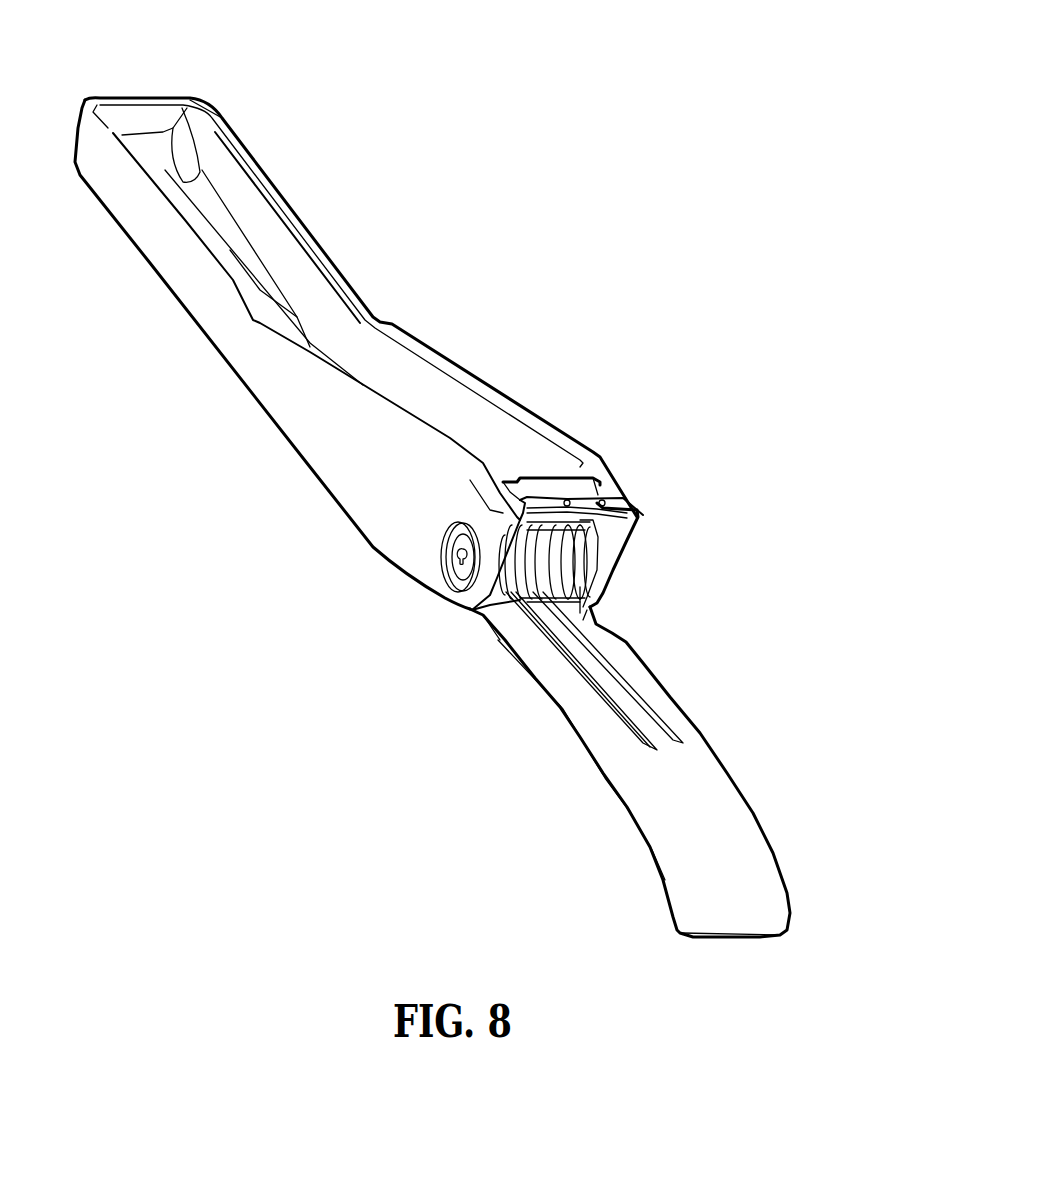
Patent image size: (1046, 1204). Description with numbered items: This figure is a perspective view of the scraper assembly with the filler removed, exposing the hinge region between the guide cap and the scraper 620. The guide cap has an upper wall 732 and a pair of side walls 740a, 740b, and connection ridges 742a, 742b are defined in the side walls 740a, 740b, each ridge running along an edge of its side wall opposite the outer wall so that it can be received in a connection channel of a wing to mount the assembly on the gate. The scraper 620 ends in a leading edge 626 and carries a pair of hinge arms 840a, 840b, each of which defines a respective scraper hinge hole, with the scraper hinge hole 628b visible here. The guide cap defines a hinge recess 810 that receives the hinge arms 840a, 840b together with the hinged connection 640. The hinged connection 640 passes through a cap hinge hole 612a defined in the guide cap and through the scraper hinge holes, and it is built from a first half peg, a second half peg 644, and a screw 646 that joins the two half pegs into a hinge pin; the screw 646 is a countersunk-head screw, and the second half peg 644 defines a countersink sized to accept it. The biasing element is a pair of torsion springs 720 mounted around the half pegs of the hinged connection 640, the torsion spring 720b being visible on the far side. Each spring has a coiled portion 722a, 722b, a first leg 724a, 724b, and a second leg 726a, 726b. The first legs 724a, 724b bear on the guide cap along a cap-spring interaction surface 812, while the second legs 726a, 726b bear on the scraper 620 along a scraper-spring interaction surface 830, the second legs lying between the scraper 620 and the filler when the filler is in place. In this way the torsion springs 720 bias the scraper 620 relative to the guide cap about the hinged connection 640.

The upper wall 732 is at (134, 96).
The connection ridge 742a is at (180, 218).
The side wall 740b is at (277, 250).
The connection ridge 742b is at (337, 257).
The side wall 740a is at (197, 292).
The cap-spring interaction surface 812 is at (527, 495).
The hinge recess 810 is at (533, 497).
The first leg 724a is at (575, 502).
The first leg 724b is at (600, 512).
The coiled portion 722b is at (585, 548).
The scraper hinge hole 628b is at (565, 553).
The torsion spring 720b is at (558, 578).
The hinge arm 840b is at (583, 607).
The second leg 726b is at (640, 693).
The scraper 620 is at (713, 827).
The second half peg 644 is at (453, 530).
The screw 646 is at (440, 550).
The hinged connection 640 is at (455, 556).
The cap hinge hole 612a is at (440, 545).
The coiled portion 722a is at (493, 603).
The hinge arm 840a is at (503, 617).
The torsion spring 720 is at (520, 607).
The scraper-spring interaction surface 830 is at (545, 705).
The second leg 726a is at (623, 727).
The leading edge 626 is at (733, 938).